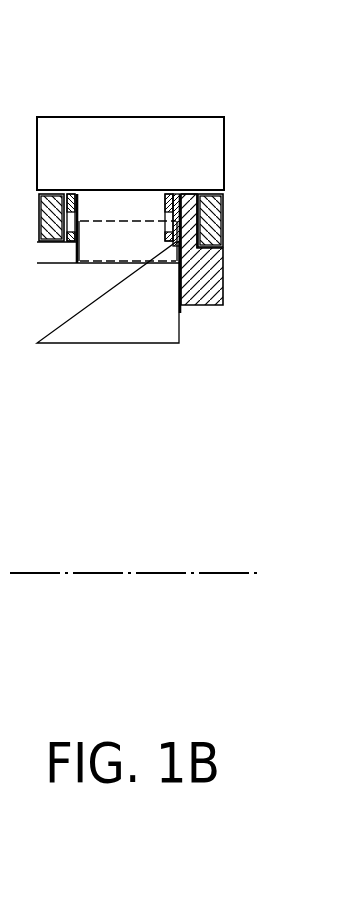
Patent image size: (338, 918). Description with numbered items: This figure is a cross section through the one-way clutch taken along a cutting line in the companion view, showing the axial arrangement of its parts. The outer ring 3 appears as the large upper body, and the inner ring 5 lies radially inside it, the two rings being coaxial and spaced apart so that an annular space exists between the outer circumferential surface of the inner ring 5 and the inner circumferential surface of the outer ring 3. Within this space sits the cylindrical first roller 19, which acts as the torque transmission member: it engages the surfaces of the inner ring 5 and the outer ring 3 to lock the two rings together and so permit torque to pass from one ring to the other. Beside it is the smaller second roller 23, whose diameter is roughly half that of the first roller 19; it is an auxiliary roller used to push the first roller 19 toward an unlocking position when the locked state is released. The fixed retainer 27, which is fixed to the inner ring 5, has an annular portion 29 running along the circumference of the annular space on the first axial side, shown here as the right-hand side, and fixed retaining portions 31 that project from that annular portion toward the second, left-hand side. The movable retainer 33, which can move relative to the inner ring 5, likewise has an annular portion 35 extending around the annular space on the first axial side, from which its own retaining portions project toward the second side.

The outer ring 3 is at (188, 150).
The inner ring 5 is at (114, 325).
The first roller 19 is at (138, 207).
The second roller 23 is at (112, 235).
The fixed retainer 27 is at (228, 229).
The annular portion 29 is at (212, 212).
The fixed retaining portions 31 is at (0, 490).
The movable retainer 33 is at (214, 314).
The annular portion 35 is at (188, 207).